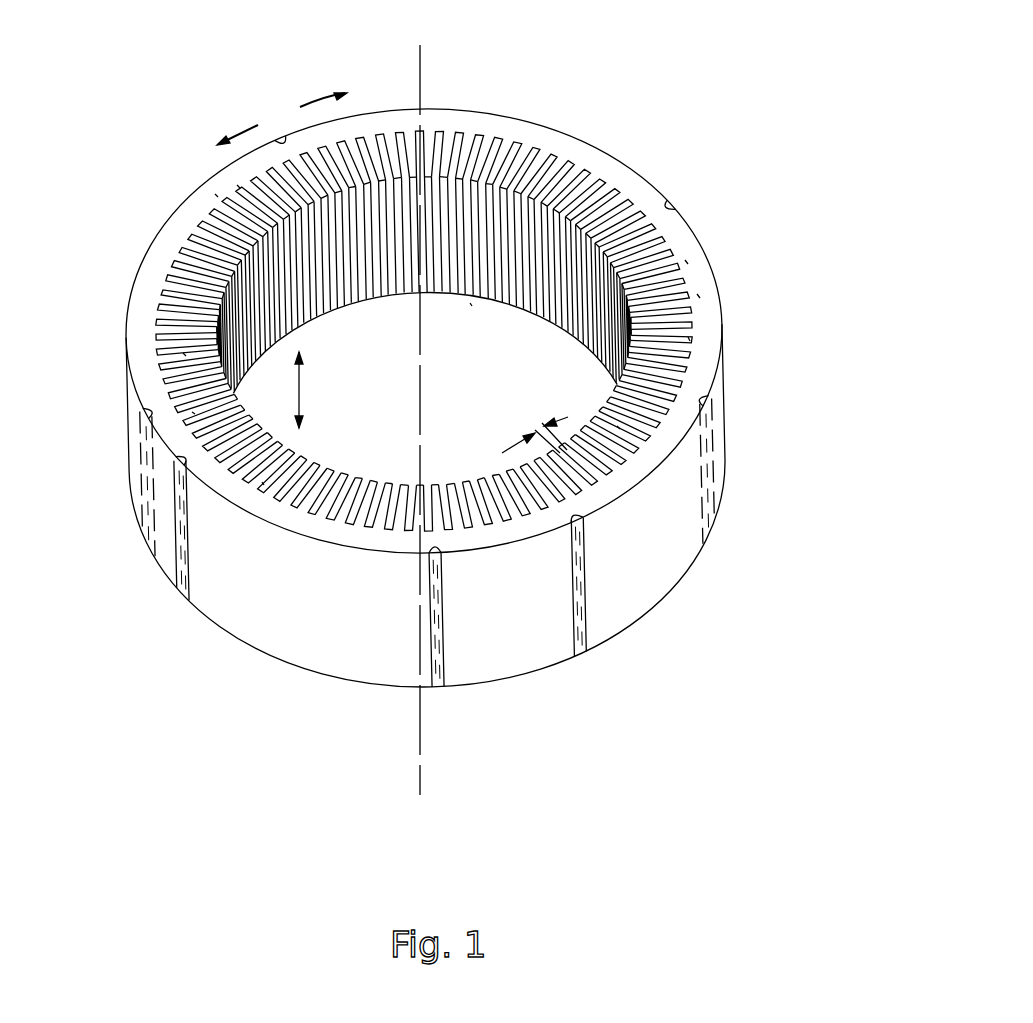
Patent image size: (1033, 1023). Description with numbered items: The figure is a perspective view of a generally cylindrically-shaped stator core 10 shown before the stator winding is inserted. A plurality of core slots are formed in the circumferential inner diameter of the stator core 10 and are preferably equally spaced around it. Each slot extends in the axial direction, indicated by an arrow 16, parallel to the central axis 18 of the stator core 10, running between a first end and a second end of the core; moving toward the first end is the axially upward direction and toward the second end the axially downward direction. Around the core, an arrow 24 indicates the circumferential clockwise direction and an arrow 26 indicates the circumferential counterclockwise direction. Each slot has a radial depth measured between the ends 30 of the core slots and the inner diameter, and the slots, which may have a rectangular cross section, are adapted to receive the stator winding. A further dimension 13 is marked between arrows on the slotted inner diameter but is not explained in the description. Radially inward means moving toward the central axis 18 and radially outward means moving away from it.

The stator core 10 is at (595, 92).
The tooth width 13 is at (568, 417).
The arrow indicating axial direction 16 is at (300, 387).
The central axis 18 is at (424, 748).
The arrow indicating circumferential clockwise direction 24 is at (318, 97).
The arrow indicating circumferential counterclockwise direction 26 is at (244, 120).
The ends of the core slots 30 is at (688, 337).